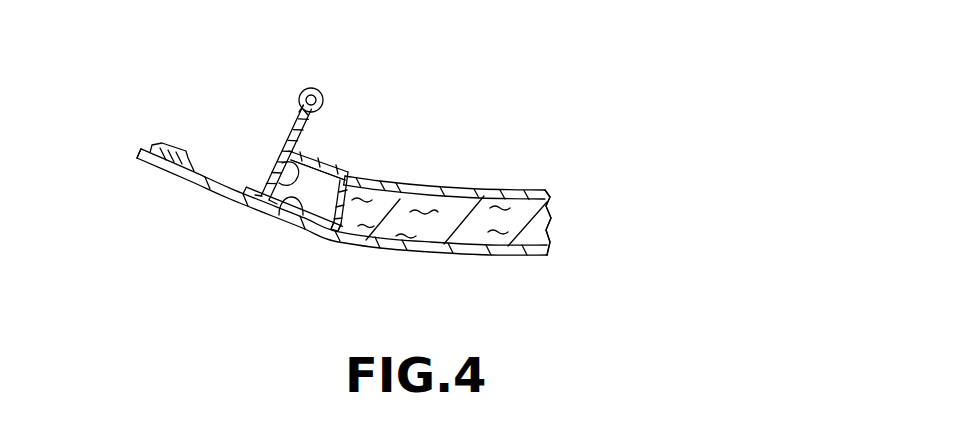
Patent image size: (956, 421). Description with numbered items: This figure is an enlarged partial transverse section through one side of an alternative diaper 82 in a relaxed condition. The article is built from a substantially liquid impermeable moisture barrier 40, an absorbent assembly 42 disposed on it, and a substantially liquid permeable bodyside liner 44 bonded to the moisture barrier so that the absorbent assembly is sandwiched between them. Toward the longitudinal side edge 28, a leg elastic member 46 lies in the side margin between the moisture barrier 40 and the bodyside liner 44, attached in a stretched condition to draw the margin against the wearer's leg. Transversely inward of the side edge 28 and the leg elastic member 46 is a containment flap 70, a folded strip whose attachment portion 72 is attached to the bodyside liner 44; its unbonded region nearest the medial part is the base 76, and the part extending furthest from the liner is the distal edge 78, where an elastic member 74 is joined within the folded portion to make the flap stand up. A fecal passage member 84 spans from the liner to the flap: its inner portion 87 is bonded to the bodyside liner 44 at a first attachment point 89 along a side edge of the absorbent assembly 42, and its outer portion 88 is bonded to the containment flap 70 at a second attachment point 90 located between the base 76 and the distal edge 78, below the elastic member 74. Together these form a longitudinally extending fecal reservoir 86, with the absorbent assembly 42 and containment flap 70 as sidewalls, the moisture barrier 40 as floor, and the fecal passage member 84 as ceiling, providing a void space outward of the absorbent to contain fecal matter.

The longitudinal side edges 28 is at (137, 151).
The moisture barrier 40 is at (547, 258).
The absorbent assembly 42 is at (549, 222).
The bodyside liner 44 is at (546, 178).
The leg elastic members 46 is at (165, 176).
The containment flaps 70 is at (283, 100).
The attachment portion 72 is at (290, 228).
The elastic members 74 is at (322, 90).
The base 76 is at (245, 205).
The distal edge 78 is at (302, 89).
The diaper 82 is at (509, 147).
The fecal passage members 84 is at (318, 160).
The fecal reservoirs 86 is at (322, 214).
The inner portion 87 is at (352, 172).
The outer portion 88 is at (262, 197).
The first attachment point 89 is at (357, 183).
The second attachment point 90 is at (287, 142).